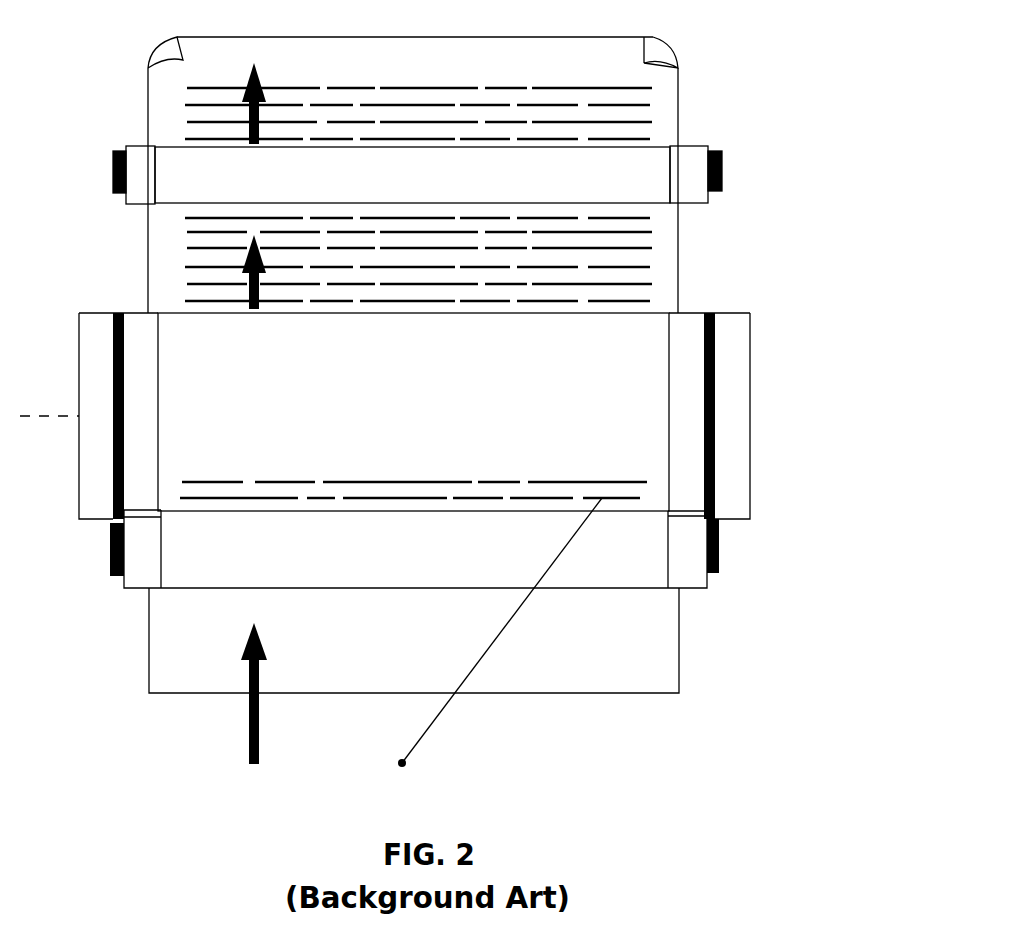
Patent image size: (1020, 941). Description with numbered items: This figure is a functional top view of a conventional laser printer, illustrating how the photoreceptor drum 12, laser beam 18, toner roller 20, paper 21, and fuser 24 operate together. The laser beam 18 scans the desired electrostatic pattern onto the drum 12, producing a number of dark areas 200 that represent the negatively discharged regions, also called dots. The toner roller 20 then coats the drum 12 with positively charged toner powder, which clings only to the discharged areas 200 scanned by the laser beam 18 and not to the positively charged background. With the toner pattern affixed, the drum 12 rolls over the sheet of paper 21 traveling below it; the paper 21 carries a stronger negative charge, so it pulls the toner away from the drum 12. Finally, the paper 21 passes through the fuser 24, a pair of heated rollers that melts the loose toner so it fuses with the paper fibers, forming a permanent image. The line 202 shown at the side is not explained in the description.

The fuser 24 is at (742, 173).
The drum 12 is at (737, 433).
The toner roller 20 is at (739, 544).
The sheet of paper 21 is at (670, 640).
The laser beam 18 is at (440, 713).
The dark areas 200 is at (215, 481).
The reference line 202 is at (40, 415).